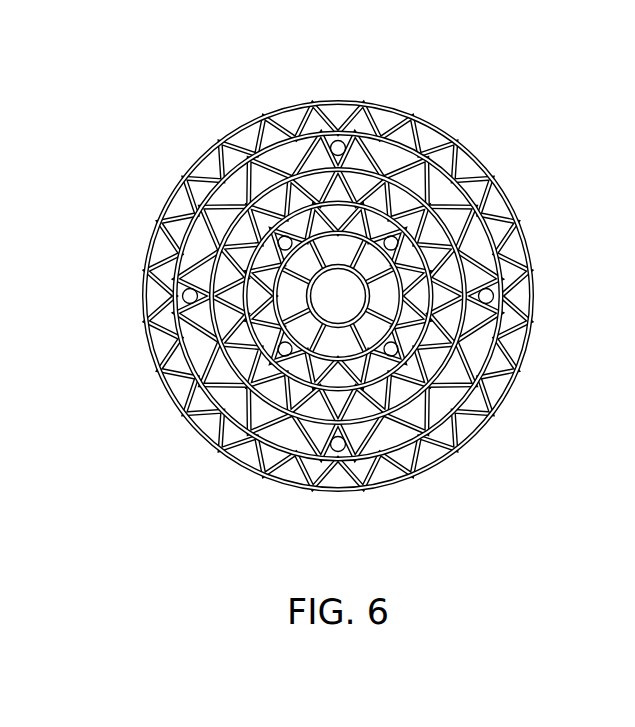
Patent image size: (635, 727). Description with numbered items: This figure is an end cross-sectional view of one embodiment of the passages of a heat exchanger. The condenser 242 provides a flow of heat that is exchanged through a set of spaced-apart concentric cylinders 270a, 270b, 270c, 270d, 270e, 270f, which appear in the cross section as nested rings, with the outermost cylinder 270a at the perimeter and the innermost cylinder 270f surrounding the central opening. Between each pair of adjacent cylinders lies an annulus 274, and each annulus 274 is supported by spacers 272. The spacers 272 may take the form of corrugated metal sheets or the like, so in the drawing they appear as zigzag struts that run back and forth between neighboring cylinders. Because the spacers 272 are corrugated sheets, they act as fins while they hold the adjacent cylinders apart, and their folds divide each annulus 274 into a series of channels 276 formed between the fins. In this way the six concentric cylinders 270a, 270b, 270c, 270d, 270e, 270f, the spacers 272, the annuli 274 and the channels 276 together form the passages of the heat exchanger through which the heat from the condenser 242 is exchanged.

The condenser 242 is at (216, 108).
The concentric cylinder 270a is at (431, 124).
The concentric cylinder 270b is at (439, 166).
The concentric cylinder 270c is at (450, 233).
The concentric cylinder 270d is at (434, 290).
The concentric cylinder 270e is at (404, 302).
The concentric cylinder 270f is at (348, 296).
The spacer 272 is at (528, 299).
The annulus 274 is at (427, 355).
The channel 276 is at (430, 455).